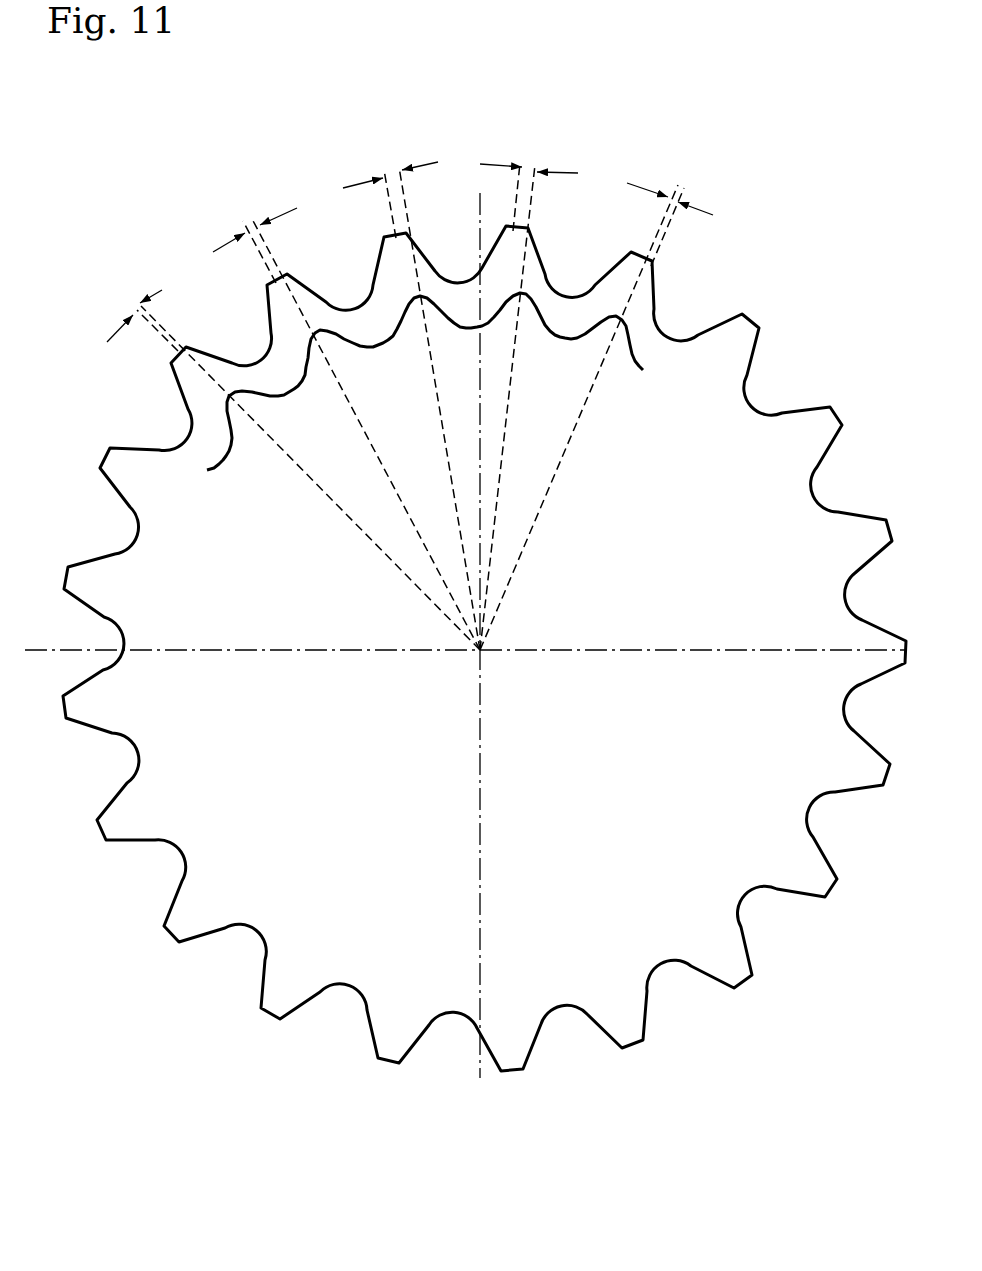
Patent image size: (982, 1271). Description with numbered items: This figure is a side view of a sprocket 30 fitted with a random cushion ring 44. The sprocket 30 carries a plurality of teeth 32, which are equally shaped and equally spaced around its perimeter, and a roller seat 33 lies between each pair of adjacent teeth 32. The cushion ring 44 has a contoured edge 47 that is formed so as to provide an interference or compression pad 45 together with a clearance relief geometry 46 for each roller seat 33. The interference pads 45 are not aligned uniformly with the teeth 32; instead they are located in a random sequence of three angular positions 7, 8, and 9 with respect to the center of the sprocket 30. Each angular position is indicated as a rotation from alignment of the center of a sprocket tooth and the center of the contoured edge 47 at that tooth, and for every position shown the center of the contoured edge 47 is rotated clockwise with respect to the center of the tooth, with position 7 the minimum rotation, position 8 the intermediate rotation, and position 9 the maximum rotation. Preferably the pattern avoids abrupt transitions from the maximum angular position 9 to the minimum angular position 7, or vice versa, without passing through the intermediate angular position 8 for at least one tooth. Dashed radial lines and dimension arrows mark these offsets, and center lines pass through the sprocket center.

The sprocket 30 is at (632, 993).
The teeth 32 is at (393, 1035).
The roller seat 33 is at (670, 333).
The random cushion ring 44 is at (352, 474).
The interference pad 45 is at (422, 297).
The clearance relief geometry 46 is at (366, 347).
The contoured edge 47 is at (400, 312).
The minimum angular position 7 is at (289, 446).
The intermediate angular position 8 is at (463, 386).
The maximum angular position 9 is at (460, 369).